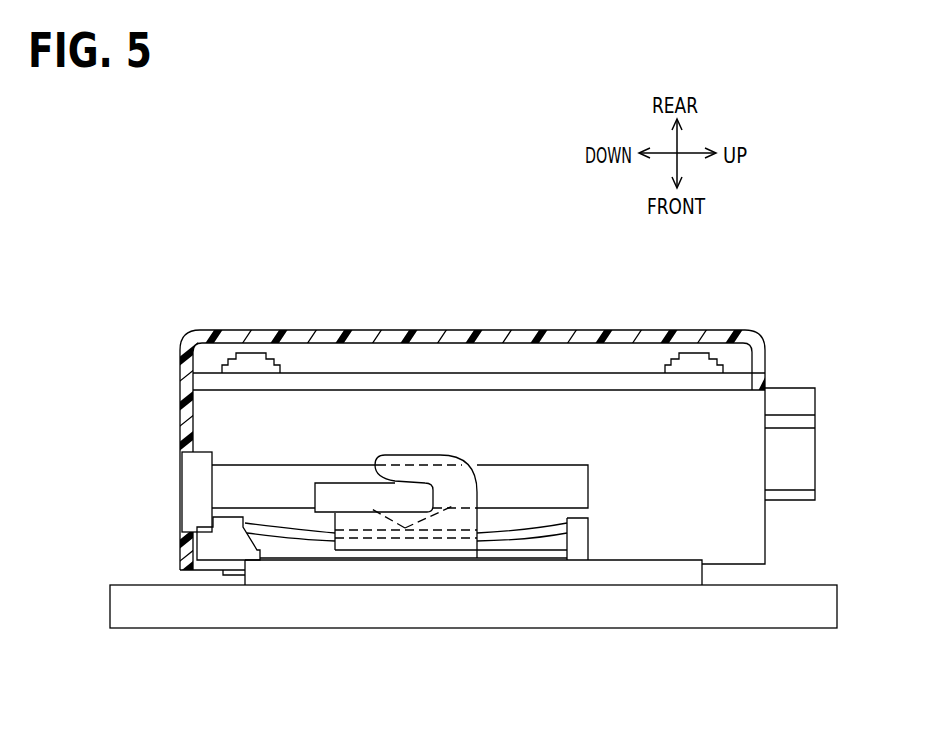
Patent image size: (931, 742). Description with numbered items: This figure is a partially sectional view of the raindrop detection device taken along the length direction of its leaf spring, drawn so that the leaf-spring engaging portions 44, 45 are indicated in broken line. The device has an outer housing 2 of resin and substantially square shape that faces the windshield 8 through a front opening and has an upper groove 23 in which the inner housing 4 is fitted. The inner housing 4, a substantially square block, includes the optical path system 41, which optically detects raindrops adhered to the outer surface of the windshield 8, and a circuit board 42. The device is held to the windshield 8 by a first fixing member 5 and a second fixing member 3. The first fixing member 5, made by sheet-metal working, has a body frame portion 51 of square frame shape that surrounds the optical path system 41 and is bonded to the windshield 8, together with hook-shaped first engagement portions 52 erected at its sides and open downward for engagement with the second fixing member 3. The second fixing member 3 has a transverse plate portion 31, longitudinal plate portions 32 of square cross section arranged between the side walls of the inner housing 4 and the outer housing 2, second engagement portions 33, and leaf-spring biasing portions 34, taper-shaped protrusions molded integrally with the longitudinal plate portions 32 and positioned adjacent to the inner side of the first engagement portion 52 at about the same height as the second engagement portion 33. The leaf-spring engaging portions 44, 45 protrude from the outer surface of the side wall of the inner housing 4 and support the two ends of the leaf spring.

The outer housing 2 is at (752, 342).
The second fixing member 3 is at (349, 415).
The inner housing 4 is at (770, 537).
The first fixing member 5 is at (444, 616).
The windshield 8 is at (798, 612).
The upper groove 23 is at (788, 462).
The transverse plate portion 31 is at (195, 482).
The longitudinal plate portion 32 is at (255, 480).
The second engagement portion 33 is at (357, 500).
The leaf-spring biasing portion 34 is at (405, 528).
The optical path system 41 is at (553, 430).
The circuit board 42 is at (627, 381).
The leaf-spring engaging portion 44 is at (225, 537).
The leaf-spring engaging portion 45 is at (578, 540).
The body frame portion 51 is at (525, 598).
The first engagement portion 52 is at (472, 462).